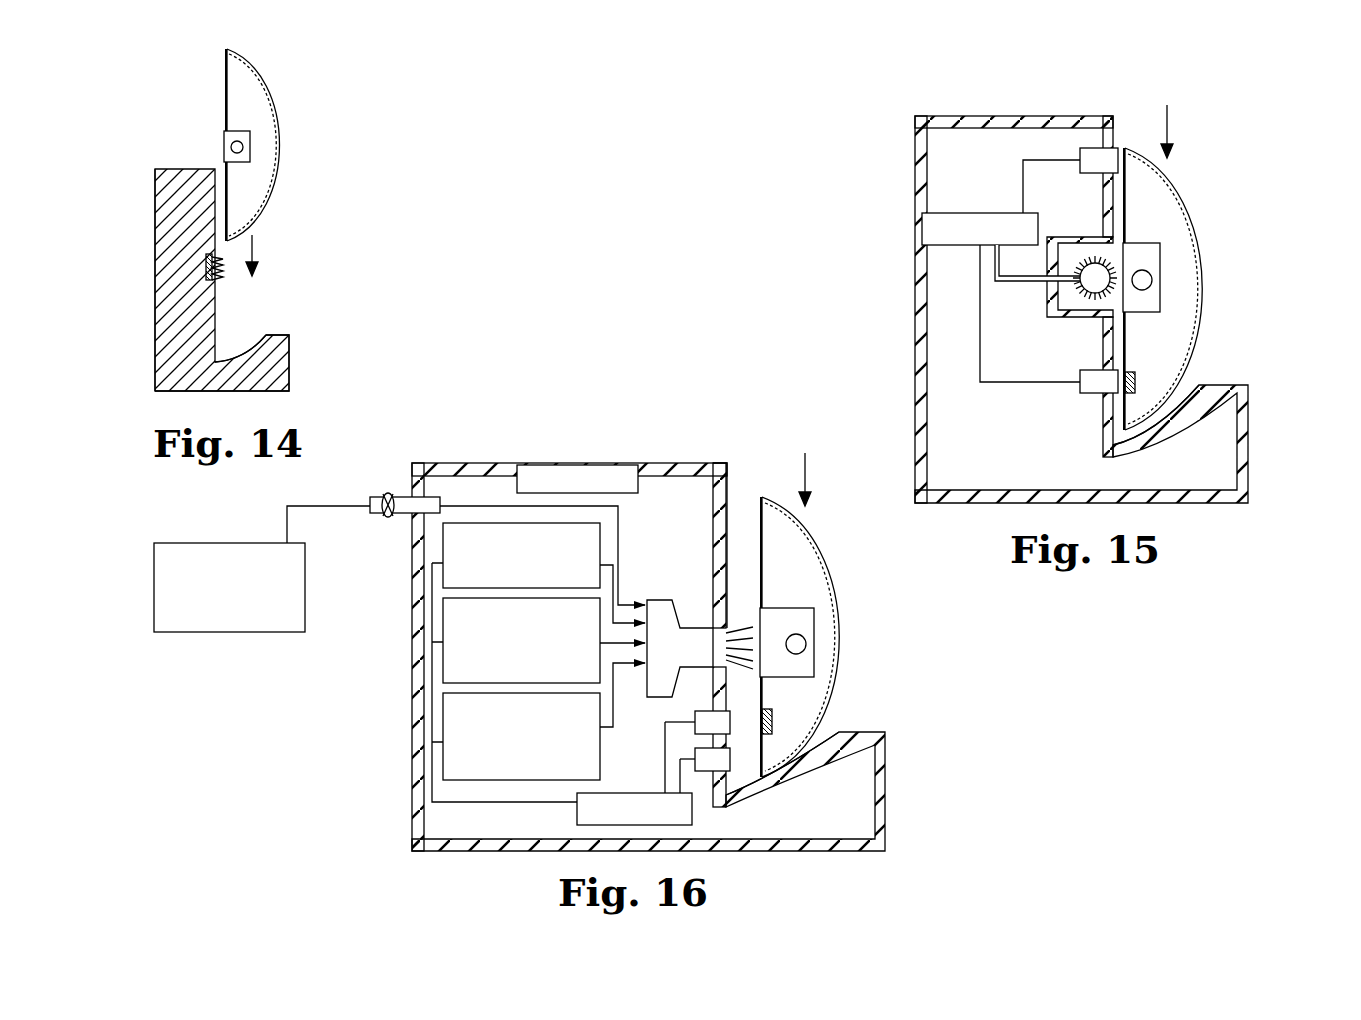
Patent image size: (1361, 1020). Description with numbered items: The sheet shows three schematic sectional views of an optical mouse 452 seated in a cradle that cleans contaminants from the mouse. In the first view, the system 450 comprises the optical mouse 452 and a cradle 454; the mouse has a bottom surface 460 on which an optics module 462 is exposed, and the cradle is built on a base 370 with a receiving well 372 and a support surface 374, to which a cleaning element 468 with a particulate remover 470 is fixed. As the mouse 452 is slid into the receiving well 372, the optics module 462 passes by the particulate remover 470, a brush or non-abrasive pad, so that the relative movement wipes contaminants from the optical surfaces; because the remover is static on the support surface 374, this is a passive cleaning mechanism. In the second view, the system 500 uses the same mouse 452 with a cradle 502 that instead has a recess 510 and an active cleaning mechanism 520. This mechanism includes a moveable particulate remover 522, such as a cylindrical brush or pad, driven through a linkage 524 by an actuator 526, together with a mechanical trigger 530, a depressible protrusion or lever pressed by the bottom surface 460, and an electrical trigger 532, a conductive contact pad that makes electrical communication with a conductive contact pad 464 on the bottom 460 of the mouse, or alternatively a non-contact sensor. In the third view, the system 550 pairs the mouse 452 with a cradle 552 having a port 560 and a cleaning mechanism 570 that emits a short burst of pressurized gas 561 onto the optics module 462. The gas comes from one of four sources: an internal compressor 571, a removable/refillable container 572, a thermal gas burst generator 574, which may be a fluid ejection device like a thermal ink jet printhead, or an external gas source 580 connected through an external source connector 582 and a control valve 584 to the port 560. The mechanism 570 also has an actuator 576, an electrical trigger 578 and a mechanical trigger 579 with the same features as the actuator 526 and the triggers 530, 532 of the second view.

In FIG. 14, the base 370 is at (289, 362).
In FIG. 16, the base 370 is at (886, 821).
In FIG. 15, the base 370 is at (1250, 470).
In FIG. 14, the receiving well 372 is at (252, 352).
In FIG. 16, the receiving well 372 is at (818, 763).
In FIG. 15, the receiving well 372 is at (1200, 400).
In FIG. 14, the support surface 374 is at (200, 345).
In FIG. 16, the support surface 374 is at (729, 463).
In FIG. 14, the system 450 is at (148, 95).
In FIG. 14, the optical mouse 452 is at (278, 80).
In FIG. 16, the optical mouse 452 is at (831, 566).
In FIG. 15, the optical mouse 452 is at (1195, 231).
In FIG. 14, the cradle 454 is at (153, 175).
In FIG. 14, the bottom surface 460 is at (227, 63).
In FIG. 16, the bottom surface 460 is at (770, 546).
In FIG. 15, the bottom surface 460 is at (1130, 205).
In FIG. 14, the optics module 462 is at (250, 146).
In FIG. 16, the optics module 462 is at (814, 626).
In FIG. 15, the optics module 462 is at (1161, 283).
In FIG. 16, the conductive contact pad 464 is at (773, 721).
In FIG. 15, the conductive contact pad 464 is at (1136, 385).
In FIG. 14, the cleaning element 468 is at (204, 264).
In FIG. 14, the particulate remover 470 is at (220, 280).
In FIG. 15, the system 500 is at (1107, 100).
In FIG. 15, the cradle 502 is at (937, 113).
In FIG. 15, the recess 510 is at (1057, 323).
In FIG. 15, the cleaning mechanism 520 is at (915, 237).
In FIG. 15, the moveable particulate remover 522 is at (1090, 262).
In FIG. 15, the linkage 524 is at (1030, 284).
In FIG. 15, the actuator 526 is at (942, 213).
In FIG. 15, the mechanical trigger 530 is at (1098, 148).
In FIG. 15, the electrical trigger 532 is at (1090, 394).
In FIG. 16, the system 550 is at (661, 413).
In FIG. 16, the cradle 552 is at (497, 460).
In FIG. 16, the port 560 is at (702, 610).
In FIG. 16, the pressurized gas 561 is at (720, 648).
In FIG. 16, the cleaning mechanism 570 is at (432, 537).
In FIG. 16, the internal compressor 571 is at (440, 548).
In FIG. 16, the removable/refillable container 572 is at (442, 607).
In FIG. 16, the thermal gas burst generator 574 is at (442, 716).
In FIG. 16, the actuator 576 is at (577, 815).
In FIG. 16, the electrical trigger 578 is at (694, 713).
In FIG. 16, the mechanical trigger 579 is at (701, 771).
In FIG. 16, the external gas source 580 is at (228, 634).
In FIG. 16, the external source connector 582 is at (435, 497).
In FIG. 16, the control valve 584 is at (388, 493).